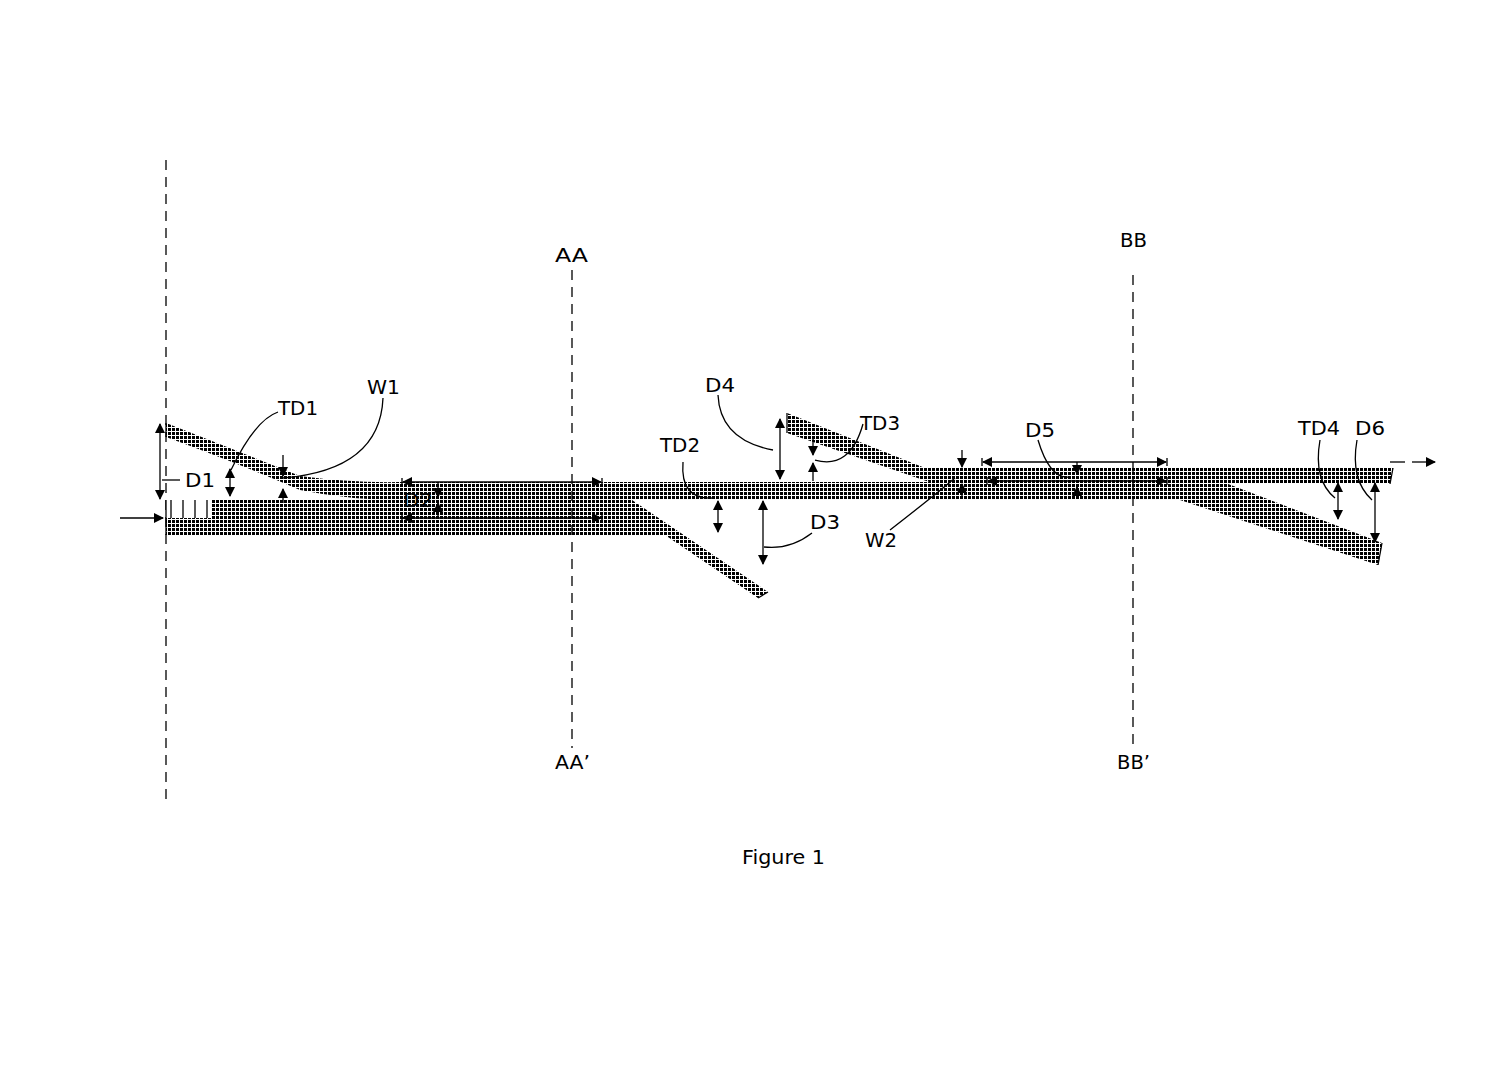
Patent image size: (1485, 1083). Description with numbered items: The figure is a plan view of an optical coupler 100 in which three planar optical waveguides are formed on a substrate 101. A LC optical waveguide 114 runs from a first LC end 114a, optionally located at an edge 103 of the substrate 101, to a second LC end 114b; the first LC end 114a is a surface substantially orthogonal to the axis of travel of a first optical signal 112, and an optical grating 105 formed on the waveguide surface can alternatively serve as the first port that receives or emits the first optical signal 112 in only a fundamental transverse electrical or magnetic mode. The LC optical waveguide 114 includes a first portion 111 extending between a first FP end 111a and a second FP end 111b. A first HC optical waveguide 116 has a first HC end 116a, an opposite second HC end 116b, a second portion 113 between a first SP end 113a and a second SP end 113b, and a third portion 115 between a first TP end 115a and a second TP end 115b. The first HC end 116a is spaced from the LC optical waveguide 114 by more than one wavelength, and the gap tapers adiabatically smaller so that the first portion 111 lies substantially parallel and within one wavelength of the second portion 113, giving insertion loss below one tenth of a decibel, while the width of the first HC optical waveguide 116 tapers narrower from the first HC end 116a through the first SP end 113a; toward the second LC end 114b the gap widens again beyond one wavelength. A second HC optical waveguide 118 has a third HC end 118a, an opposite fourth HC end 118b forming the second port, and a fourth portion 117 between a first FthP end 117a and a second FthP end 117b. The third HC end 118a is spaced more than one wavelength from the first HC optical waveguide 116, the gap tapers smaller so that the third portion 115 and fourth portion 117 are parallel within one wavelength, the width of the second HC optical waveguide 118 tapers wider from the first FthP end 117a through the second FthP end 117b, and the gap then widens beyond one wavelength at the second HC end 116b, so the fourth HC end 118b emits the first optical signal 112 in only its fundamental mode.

The optical coupler 100 is at (780, 173).
The substrate 101 is at (910, 730).
The edge 103 is at (167, 742).
The optical grating 105 is at (196, 532).
The first portion 111 is at (560, 522).
The first FP end 111a is at (408, 520).
The second FP end 111b is at (603, 521).
The first optical signal 112 is at (120, 517).
The second portion 113 is at (553, 480).
The first SP end 113a is at (403, 480).
The second SP end 113b is at (603, 482).
The LC optical waveguide 114 is at (333, 535).
The first LC end 114a is at (167, 535).
The second LC end 114b is at (756, 596).
The third portion 115 is at (1090, 483).
The first TP end 115a is at (990, 482).
The second TP end 115b is at (1168, 482).
The first HC optical waveguide 116 is at (620, 480).
The first HC end 116a is at (164, 420).
The second HC end 116b is at (1378, 547).
The fourth portion 117 is at (1115, 461).
The first FthP end 117a is at (985, 461).
The second FthP end 117b is at (1160, 461).
The second HC optical waveguide 118 is at (1225, 468).
The third HC end 118a is at (786, 414).
The fourth HC end 118b is at (1393, 465).